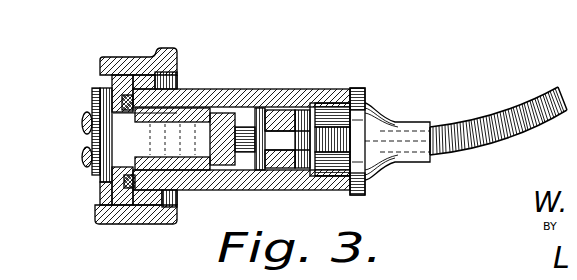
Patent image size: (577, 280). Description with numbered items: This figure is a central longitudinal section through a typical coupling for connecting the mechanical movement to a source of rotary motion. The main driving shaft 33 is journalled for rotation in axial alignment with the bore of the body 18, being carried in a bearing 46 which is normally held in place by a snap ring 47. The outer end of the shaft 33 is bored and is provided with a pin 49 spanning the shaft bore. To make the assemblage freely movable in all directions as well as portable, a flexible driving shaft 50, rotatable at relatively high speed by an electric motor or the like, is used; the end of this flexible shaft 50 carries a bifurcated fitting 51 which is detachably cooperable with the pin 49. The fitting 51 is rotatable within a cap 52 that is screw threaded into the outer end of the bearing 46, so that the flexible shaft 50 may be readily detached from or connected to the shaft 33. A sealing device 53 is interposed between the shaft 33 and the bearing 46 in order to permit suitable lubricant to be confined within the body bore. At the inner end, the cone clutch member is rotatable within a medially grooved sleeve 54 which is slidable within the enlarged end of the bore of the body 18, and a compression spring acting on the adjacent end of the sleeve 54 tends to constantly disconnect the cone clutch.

The body 18 is at (158, 49).
The main driving shaft 33 is at (89, 150).
The bearing 46 is at (281, 180).
The snap ring 47 is at (165, 208).
The pin 49 is at (257, 112).
The flexible driving shaft 50 is at (538, 112).
The bifurcated fitting 51 is at (302, 138).
The cap 52 is at (390, 141).
The sealing device 53 is at (133, 97).
The medially grooved sleeve 54 is at (100, 79).